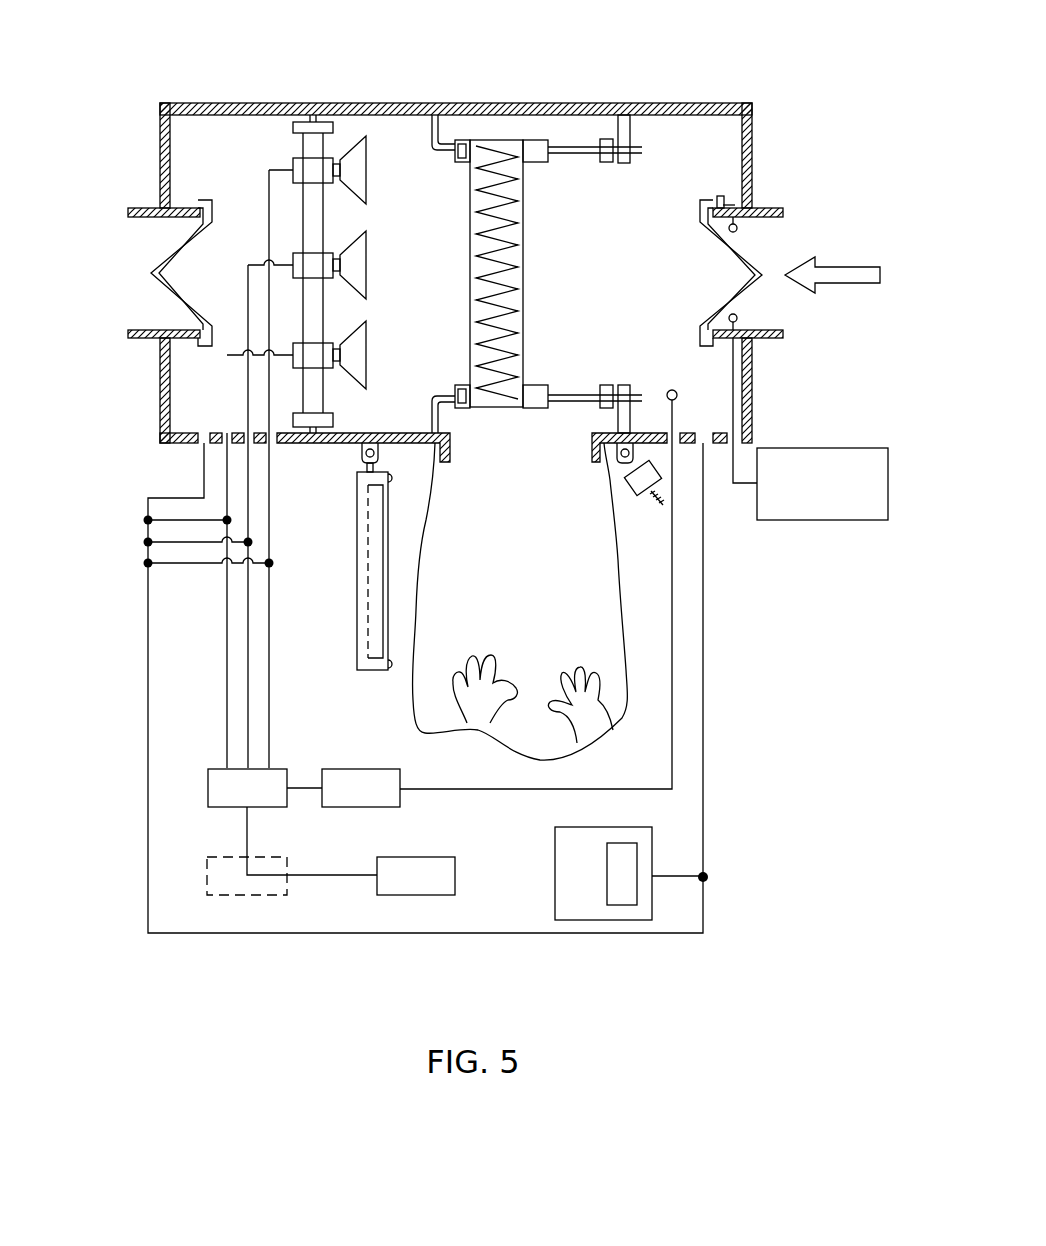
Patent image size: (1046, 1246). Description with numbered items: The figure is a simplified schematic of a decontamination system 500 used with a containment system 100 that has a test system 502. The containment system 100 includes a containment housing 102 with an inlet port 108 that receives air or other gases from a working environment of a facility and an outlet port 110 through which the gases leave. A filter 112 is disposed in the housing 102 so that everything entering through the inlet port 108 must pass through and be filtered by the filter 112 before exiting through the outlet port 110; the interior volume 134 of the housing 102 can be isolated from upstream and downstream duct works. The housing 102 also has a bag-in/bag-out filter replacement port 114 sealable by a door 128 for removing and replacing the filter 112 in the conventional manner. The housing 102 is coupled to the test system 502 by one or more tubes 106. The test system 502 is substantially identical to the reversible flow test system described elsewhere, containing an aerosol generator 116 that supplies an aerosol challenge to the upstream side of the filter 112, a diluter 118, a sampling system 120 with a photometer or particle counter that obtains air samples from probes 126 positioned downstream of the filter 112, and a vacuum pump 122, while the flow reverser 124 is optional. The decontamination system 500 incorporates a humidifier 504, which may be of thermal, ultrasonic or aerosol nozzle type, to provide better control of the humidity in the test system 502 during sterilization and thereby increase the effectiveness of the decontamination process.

The containment system 100 is at (744, 66).
The containment housing 102 is at (393, 102).
The tubes 106 is at (218, 578).
The inlet port 108 is at (790, 242).
The outlet port 110 is at (146, 303).
The filter 112 is at (520, 249).
The bag-in/bag-out filter replacement port 114 is at (590, 445).
The aerosol generator 116 is at (840, 447).
The diluter 118 is at (345, 797).
The sampling system 120 is at (231, 797).
The vacuum pump 122 is at (400, 886).
The flow reverser 124 is at (253, 895).
The probes 126 is at (373, 361).
The door 128 is at (353, 572).
The interior volume 134 is at (596, 227).
The decontamination system 500 is at (664, 841).
The test system 502 is at (293, 751).
The humidifier 504 is at (627, 890).